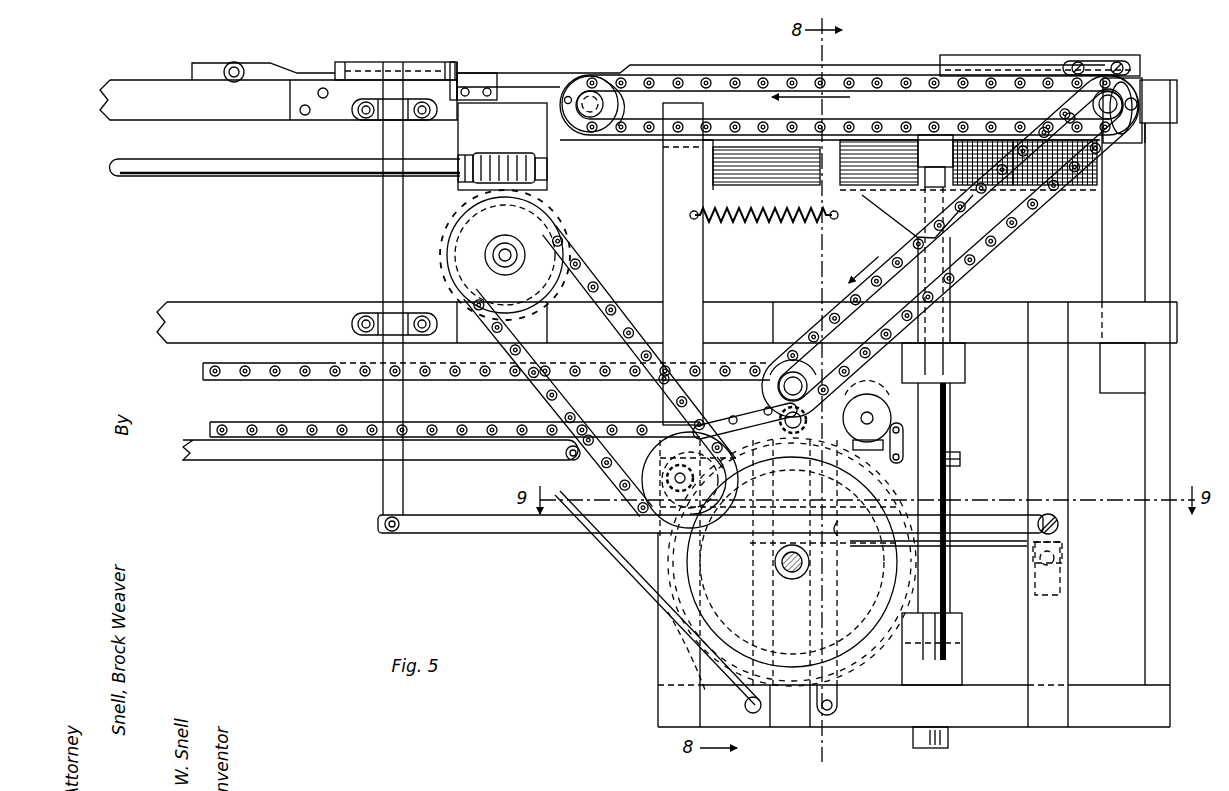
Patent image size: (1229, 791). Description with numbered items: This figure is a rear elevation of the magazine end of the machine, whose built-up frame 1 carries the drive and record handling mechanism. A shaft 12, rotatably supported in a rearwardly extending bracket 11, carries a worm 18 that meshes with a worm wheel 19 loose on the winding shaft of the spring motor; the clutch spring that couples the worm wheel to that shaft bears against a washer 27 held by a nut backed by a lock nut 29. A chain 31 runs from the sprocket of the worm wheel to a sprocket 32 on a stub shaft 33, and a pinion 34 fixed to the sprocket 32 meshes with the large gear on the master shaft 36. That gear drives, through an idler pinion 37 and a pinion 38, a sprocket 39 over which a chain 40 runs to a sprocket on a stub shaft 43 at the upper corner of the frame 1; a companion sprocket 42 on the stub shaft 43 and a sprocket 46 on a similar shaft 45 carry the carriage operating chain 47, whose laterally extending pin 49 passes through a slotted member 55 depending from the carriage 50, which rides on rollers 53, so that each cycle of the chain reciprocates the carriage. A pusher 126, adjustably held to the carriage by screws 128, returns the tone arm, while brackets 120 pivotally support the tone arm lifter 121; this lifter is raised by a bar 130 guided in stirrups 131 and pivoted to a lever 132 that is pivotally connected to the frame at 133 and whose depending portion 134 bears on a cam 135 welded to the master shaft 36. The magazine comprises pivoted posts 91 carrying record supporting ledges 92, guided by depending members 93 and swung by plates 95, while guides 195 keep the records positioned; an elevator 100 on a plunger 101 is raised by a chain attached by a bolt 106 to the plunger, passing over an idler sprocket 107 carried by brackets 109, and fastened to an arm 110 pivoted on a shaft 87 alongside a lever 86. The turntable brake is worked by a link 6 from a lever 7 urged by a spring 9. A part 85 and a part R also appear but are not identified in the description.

The frame 1 is at (1163, 441).
The link 6 is at (712, 143).
The lever 7 is at (822, 250).
The spring 9 is at (762, 218).
The bracket 11 is at (458, 158).
The shaft 12 is at (273, 178).
The worm 18 is at (508, 153).
The worm wheel 19 is at (565, 223).
The washer 27 is at (507, 238).
The lock nut 29 is at (505, 264).
The chain 31 is at (590, 277).
The sprocket 32 is at (626, 491).
The stub shaft 33 is at (706, 506).
The pinion 34 is at (673, 479).
The master element or master shaft 36 is at (795, 580).
The idler pinion 37 is at (794, 434).
The pinion 38 is at (779, 383).
The sprocket 39 is at (798, 362).
The chain 40 is at (998, 248).
The sprocket 42 is at (1067, 112).
The stub shaft 43 is at (1133, 101).
The shaft 45 is at (589, 91).
The sprocket 46 is at (614, 112).
The carriage operating chain 47 is at (751, 77).
The pin 49 is at (1178, 103).
The carriage 50 is at (698, 65).
The rollers 53 is at (237, 62).
The slotted member 55 is at (1133, 144).
The feed chain arm 85 is at (342, 459).
The lever 86 is at (667, 612).
The shaft 87 is at (760, 712).
The posts 91 is at (945, 405).
The record supporting ledges 92 is at (893, 219).
The depending members 93 is at (940, 132).
The plates 95 is at (860, 652).
The elevator 100 is at (1085, 190).
The plunger 101 is at (950, 483).
The bolt 106 is at (962, 459).
The idler sprocket 107 is at (905, 441).
The brackets 109 is at (887, 398).
The arm 110 is at (632, 556).
The brackets 120 is at (470, 73).
The tone arm lifter 121 is at (439, 62).
The pusher 126 is at (1008, 55).
The screws 128 is at (1119, 61).
The bar 130 is at (384, 245).
The stirrups 131 is at (372, 122).
The lever 132 is at (531, 534).
The pivotal connection 133 is at (1060, 526).
The depending portion 134 is at (838, 521).
The cam 135 is at (812, 563).
The guides 195 is at (1112, 257).
The hatched block R is at (766, 172).